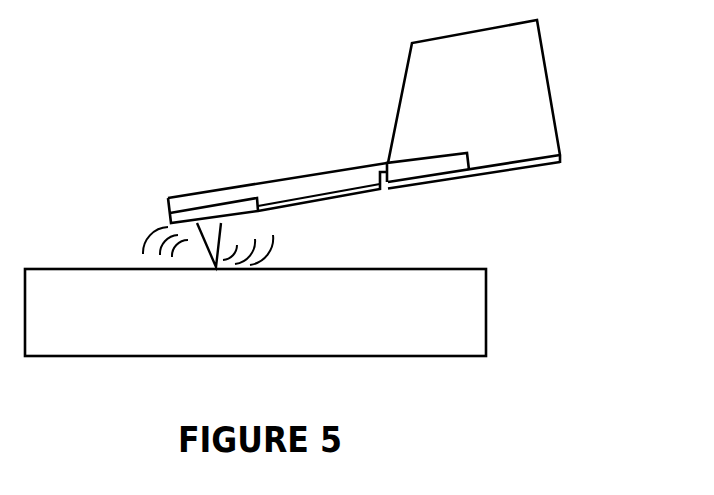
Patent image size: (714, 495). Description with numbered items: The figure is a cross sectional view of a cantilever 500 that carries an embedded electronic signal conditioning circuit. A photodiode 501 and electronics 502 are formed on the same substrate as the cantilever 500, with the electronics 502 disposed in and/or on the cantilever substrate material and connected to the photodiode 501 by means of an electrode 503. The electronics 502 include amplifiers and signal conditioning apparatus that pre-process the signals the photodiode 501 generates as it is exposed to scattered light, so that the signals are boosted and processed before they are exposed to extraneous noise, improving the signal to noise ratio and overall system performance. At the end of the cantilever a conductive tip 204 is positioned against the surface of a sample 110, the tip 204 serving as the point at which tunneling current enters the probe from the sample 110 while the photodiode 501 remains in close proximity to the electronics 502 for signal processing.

The cantilever 500 is at (490, 107).
The photodiode 501 is at (245, 200).
The electronics 502 is at (386, 161).
The electrode 503 is at (320, 204).
The tip 204 is at (214, 228).
The sample 110 is at (412, 336).